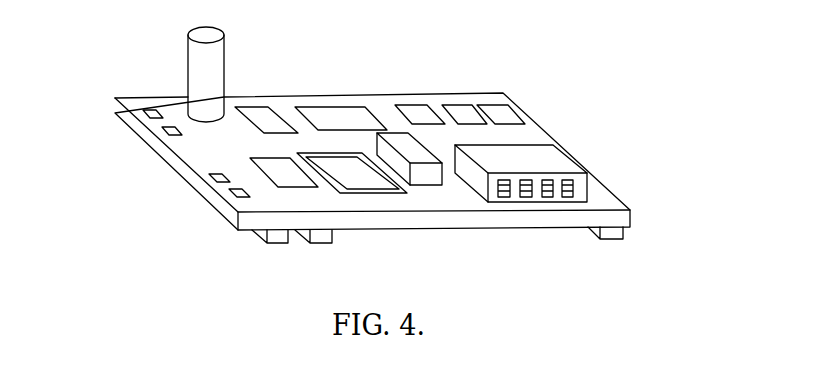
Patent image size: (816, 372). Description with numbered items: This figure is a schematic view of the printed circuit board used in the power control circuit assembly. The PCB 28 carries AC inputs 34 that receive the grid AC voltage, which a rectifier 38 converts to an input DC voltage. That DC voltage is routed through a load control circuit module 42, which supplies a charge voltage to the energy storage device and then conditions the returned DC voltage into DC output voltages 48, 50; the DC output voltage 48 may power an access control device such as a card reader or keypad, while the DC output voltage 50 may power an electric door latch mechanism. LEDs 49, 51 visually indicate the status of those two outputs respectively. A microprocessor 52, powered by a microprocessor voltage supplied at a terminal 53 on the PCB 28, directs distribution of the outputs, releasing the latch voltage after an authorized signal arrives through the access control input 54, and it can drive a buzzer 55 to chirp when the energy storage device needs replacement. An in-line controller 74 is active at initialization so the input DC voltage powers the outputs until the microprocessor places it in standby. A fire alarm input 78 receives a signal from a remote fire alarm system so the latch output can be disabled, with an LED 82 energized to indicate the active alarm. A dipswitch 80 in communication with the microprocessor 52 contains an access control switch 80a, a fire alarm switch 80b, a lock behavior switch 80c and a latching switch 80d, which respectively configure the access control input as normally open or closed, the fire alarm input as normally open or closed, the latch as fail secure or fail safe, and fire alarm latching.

The printed circuit board 28 is at (483, 93).
The AC inputs 34 is at (166, 130).
The rectifier 38 is at (220, 60).
The load control circuit module 42 is at (337, 115).
The DC output voltage 48 is at (213, 176).
The LED 49 is at (280, 244).
The DC output voltage 50 is at (233, 193).
The LED 51 is at (318, 244).
The microprocessor 52 is at (352, 173).
The terminal 53 is at (423, 178).
The access control input 54 is at (415, 110).
The buzzer 55 is at (502, 115).
The in-line controller 74 is at (293, 180).
The fire alarm input 78 is at (458, 112).
The dipswitch 80 is at (550, 158).
The access control switch 80a is at (503, 200).
The fire alarm switch 80b is at (525, 200).
The lock behavior switch 80c is at (547, 200).
The latching switch 80d is at (568, 200).
The LED 82 is at (613, 240).